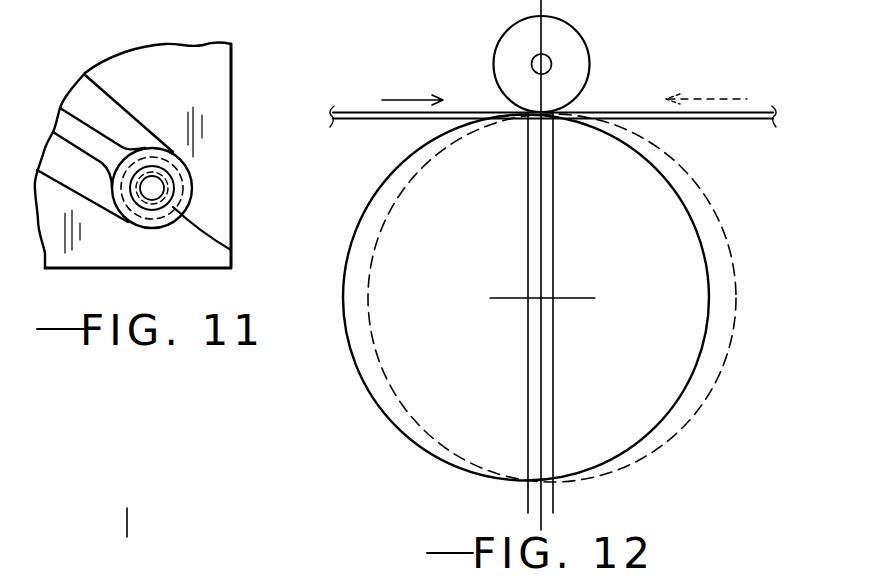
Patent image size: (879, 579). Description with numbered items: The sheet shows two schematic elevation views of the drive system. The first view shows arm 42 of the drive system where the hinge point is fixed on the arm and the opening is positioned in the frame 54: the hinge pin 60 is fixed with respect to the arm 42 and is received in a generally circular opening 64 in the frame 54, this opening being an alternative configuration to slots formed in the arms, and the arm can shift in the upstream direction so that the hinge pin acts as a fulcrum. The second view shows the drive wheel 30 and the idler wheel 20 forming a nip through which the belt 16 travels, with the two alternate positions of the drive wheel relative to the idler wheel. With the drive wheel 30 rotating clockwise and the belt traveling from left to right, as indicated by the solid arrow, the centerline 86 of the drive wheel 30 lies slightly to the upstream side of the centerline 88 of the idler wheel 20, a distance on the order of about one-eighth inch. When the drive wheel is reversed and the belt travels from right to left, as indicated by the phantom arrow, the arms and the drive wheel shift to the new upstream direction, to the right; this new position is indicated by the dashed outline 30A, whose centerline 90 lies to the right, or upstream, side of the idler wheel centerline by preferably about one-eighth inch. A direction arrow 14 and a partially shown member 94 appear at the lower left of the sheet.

In FIG. 11, the direction arrow 14 is at (127, 517).
In FIG. 12, the belt 16 is at (632, 113).
In FIG. 12, the idler wheel 20 is at (587, 43).
In FIG. 12, the drive wheel 30 is at (355, 362).
In FIG. 12, the dashed outline of drive wheel 30A is at (725, 222).
In FIG. 11, the arm 42 is at (130, 110).
In FIG. 11, the frame 54 is at (231, 97).
In FIG. 11, the hinge pin 60 is at (231, 250).
In FIG. 11, the circular opening 64 is at (183, 182).
In FIG. 12, the centerline of drive wheel 86 is at (528, 353).
In FIG. 12, the centerline of idler wheel 88 is at (541, 33).
In FIG. 12, the centerline of drive wheel in shifted position 90 is at (553, 342).
In FIG. 11, the member 94 is at (103, 568).